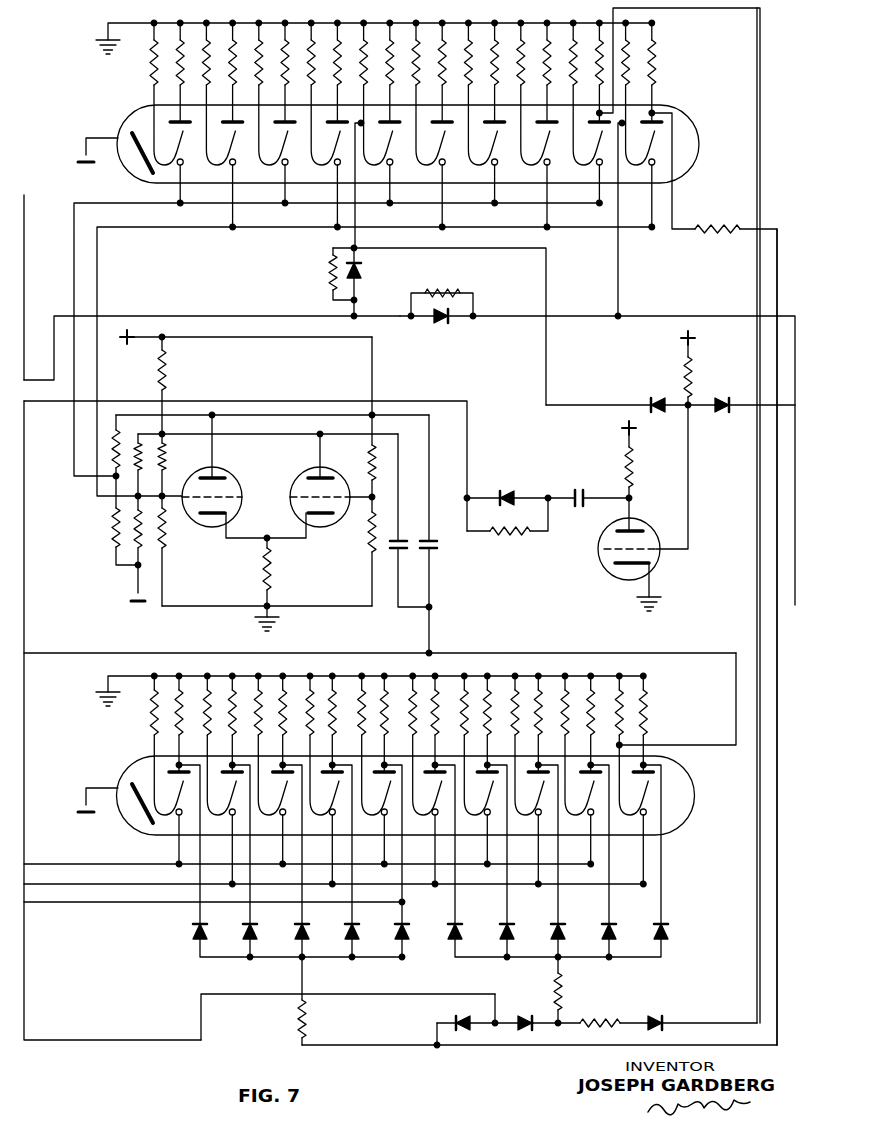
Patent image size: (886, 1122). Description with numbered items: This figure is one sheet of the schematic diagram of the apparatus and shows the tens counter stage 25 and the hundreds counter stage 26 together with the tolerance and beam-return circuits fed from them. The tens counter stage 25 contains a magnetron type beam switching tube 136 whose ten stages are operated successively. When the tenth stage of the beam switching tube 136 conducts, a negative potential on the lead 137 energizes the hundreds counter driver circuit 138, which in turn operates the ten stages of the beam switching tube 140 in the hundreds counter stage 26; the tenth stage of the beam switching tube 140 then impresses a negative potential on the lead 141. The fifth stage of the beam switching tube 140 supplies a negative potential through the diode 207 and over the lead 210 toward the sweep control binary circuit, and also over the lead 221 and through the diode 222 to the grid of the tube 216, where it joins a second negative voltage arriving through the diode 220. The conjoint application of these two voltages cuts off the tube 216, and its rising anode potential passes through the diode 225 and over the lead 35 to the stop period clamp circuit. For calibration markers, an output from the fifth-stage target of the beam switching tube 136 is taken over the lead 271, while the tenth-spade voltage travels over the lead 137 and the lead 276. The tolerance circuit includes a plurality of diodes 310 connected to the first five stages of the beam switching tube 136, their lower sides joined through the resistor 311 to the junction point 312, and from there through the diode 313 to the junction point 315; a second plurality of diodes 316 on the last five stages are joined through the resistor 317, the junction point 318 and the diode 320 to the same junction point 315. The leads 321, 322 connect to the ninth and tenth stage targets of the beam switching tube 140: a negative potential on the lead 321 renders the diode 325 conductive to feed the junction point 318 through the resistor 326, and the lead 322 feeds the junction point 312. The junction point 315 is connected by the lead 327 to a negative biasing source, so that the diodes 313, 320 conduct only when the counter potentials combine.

The hundreds counter stage 26 is at (114, 79).
The beam switching tube 140 is at (672, 105).
The diode 207 is at (364, 269).
The lead 221 is at (546, 362).
The lead 210 is at (195, 316).
The lead 141 is at (664, 316).
The hundreds counter driver circuit 138 is at (282, 489).
The lead 35 is at (467, 440).
The diode 225 is at (506, 493).
The tube 216 is at (600, 572).
The diode 222 is at (657, 400).
The diode 220 is at (727, 388).
The lead 321 is at (757, 564).
The lead 322 is at (777, 601).
The lead 276 is at (118, 657).
The lead 137 is at (736, 705).
The tens counter stage 25 is at (114, 727).
The beam switching tube 136 is at (694, 782).
The lead 271 is at (306, 904).
The diodes 310 is at (218, 919).
The diodes 316 is at (469, 919).
The lead 327 is at (375, 994).
The resistor 311 is at (297, 1015).
The junction point 312 is at (436, 1048).
The diode 313 is at (461, 1016).
The junction point 315 is at (497, 1020).
The junction point 318 is at (556, 1018).
The diode 320 is at (529, 1026).
The resistor 317 is at (562, 994).
The resistor 326 is at (590, 1014).
The diode 325 is at (660, 1014).